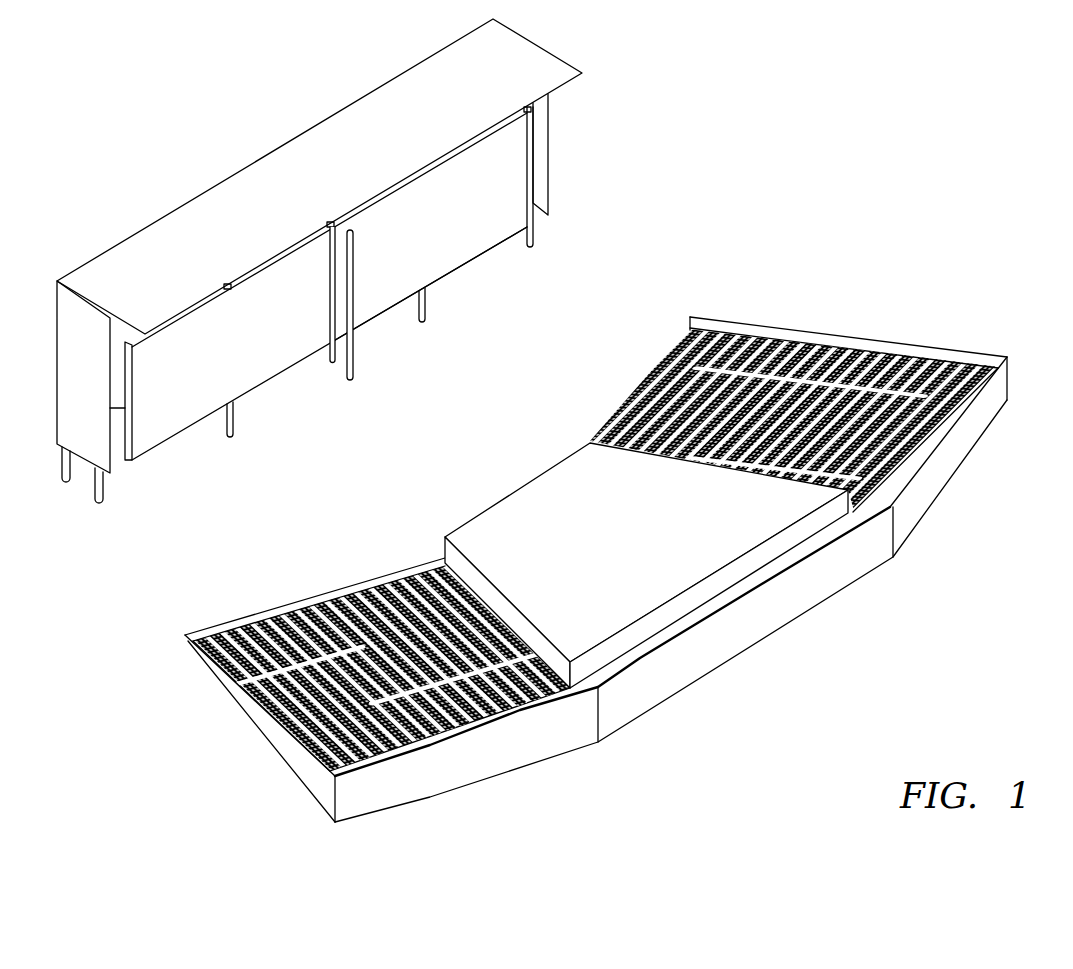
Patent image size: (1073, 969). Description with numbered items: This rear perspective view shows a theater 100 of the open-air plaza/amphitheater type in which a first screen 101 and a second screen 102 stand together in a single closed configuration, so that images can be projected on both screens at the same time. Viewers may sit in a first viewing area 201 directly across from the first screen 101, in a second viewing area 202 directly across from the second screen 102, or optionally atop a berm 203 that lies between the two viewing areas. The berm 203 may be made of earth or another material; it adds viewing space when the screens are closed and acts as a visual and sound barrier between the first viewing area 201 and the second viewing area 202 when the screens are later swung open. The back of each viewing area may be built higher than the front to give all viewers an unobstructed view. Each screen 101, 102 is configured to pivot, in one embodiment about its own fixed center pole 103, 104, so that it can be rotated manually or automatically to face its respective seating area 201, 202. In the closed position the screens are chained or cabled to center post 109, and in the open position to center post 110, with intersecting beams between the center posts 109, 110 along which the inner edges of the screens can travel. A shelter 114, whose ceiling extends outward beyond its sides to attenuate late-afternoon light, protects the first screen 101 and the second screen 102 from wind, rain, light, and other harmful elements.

The theater 100 is at (980, 85).
The first screen 101 is at (150, 442).
The second screen 102 is at (369, 313).
The center pole 103 is at (234, 440).
The center pole 104 is at (423, 323).
The center post 109 is at (320, 368).
The center post 110 is at (353, 380).
The shelter 114 is at (258, 182).
The first viewing area 201 is at (333, 606).
The second viewing area 202 is at (666, 376).
The berm 203 is at (565, 492).